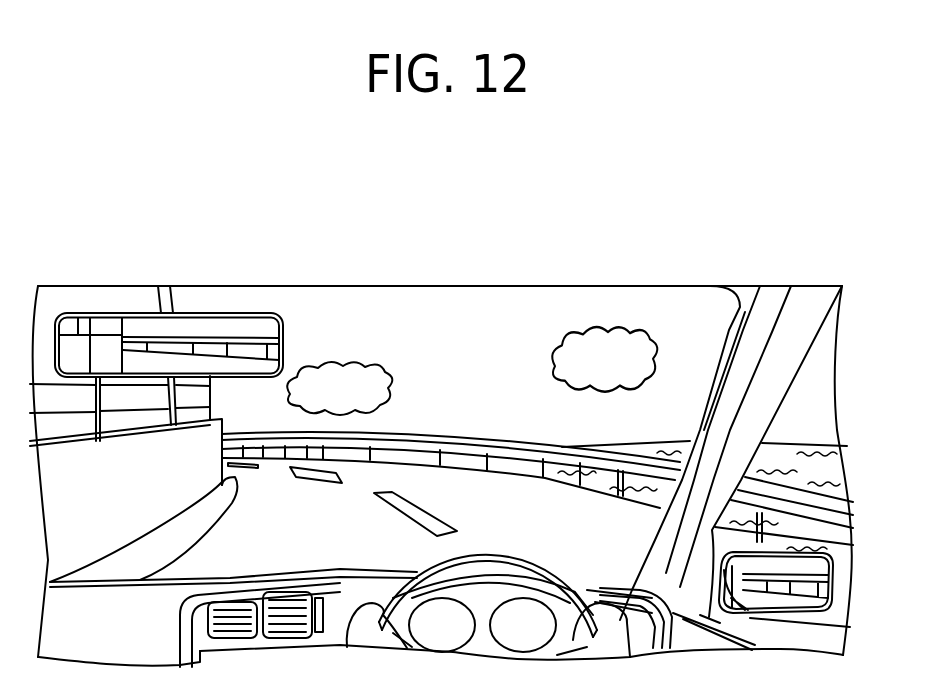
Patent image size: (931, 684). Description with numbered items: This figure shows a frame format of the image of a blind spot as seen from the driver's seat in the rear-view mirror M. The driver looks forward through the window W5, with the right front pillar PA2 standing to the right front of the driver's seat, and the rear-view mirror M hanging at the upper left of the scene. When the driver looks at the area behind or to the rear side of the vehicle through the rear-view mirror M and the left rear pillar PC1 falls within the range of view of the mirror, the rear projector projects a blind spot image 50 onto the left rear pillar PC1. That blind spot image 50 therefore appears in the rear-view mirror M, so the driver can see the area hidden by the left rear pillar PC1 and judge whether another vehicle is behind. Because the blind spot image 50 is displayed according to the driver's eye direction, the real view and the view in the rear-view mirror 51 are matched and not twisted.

The blind spot image 50 is at (81, 325).
The view in the rear-view mirror 51 is at (232, 325).
The rear-view mirror M is at (283, 332).
The window W5 is at (507, 292).
The front pillar PA2 is at (777, 293).
The rear pillar PC1 is at (91, 360).